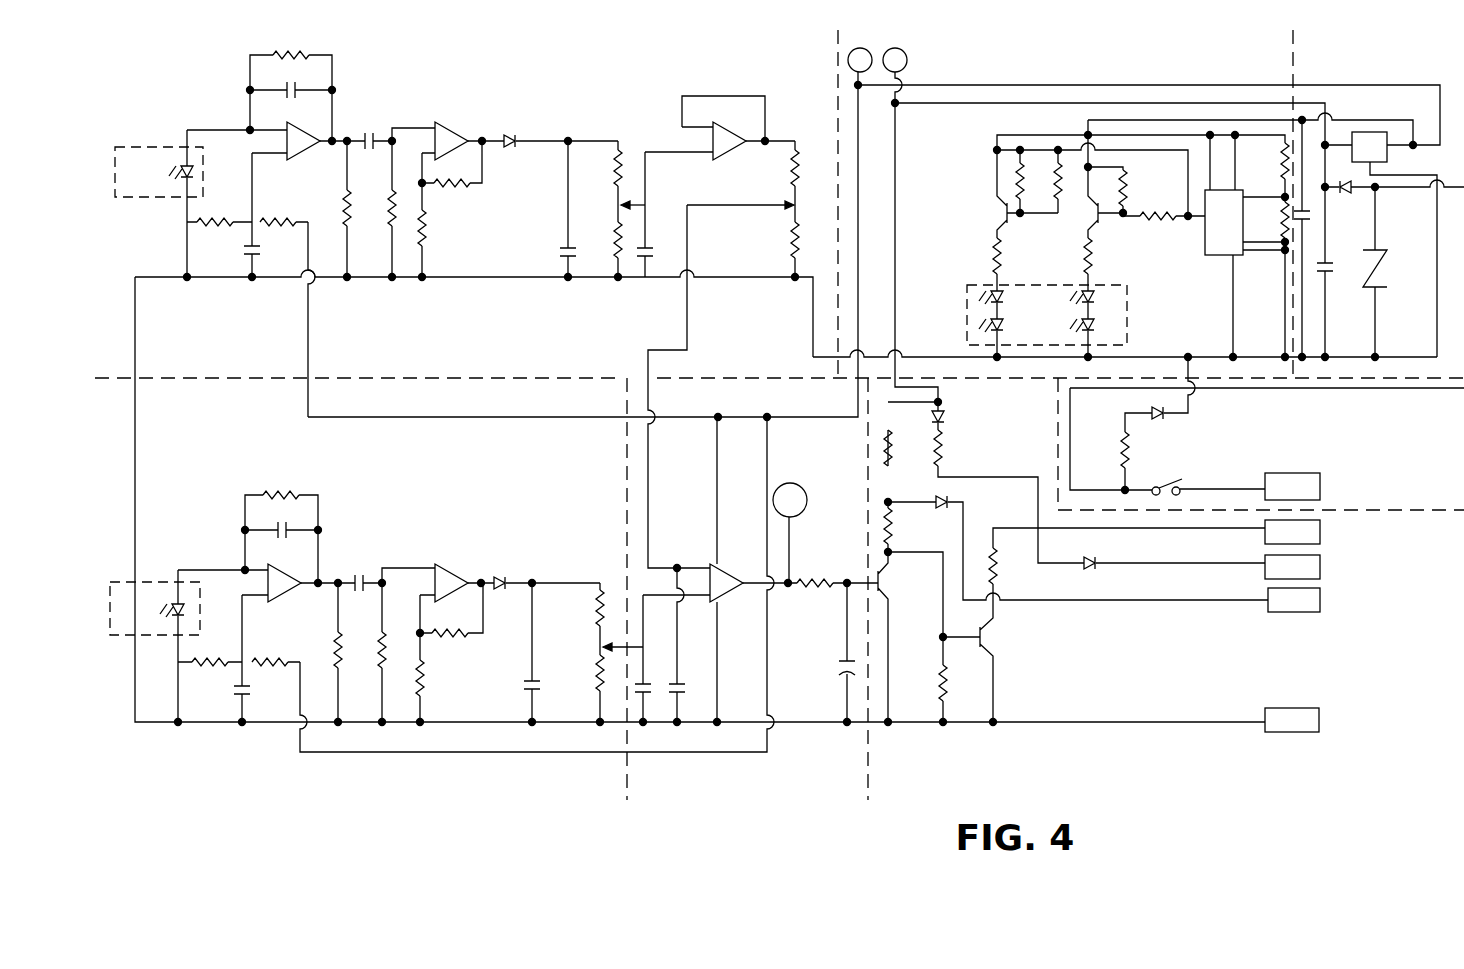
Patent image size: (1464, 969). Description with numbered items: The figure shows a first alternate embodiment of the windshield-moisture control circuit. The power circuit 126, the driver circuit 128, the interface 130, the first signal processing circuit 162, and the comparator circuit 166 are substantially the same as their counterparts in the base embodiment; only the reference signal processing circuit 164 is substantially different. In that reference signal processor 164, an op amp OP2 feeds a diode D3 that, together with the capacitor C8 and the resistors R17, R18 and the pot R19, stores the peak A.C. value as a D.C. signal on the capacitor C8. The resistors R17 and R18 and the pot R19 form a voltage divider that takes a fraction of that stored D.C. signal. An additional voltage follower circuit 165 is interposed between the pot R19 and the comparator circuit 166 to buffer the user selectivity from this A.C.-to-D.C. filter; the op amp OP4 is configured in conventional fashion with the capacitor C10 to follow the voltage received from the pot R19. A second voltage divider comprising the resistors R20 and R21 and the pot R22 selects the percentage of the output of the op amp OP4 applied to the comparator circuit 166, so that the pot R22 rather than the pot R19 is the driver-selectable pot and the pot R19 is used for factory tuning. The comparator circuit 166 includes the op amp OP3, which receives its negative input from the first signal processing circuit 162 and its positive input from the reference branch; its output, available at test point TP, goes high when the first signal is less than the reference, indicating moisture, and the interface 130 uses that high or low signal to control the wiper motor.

The reference signal processing circuit 164 is at (472, 60).
The voltage follower circuit 165 is at (709, 84).
The driver circuit 128 is at (1137, 60).
The power circuit 126 is at (1297, 443).
The first signal processing circuit 162 is at (424, 798).
The comparator circuit 166 is at (700, 798).
The interface 130 is at (1002, 798).
The op amp OP2 is at (447, 132).
The op amp OP3 is at (726, 593).
The op amp OP4 is at (728, 146).
The diode D3 is at (513, 139).
The resistor R17 is at (624, 155).
The resistor R18 is at (617, 250).
The pot R19 is at (617, 207).
The resistor R20 is at (798, 154).
The resistor R21 is at (790, 252).
The pot R22 is at (762, 203).
The capacitor C8 is at (568, 250).
The capacitor C10 is at (645, 248).
The test point TP is at (790, 533).